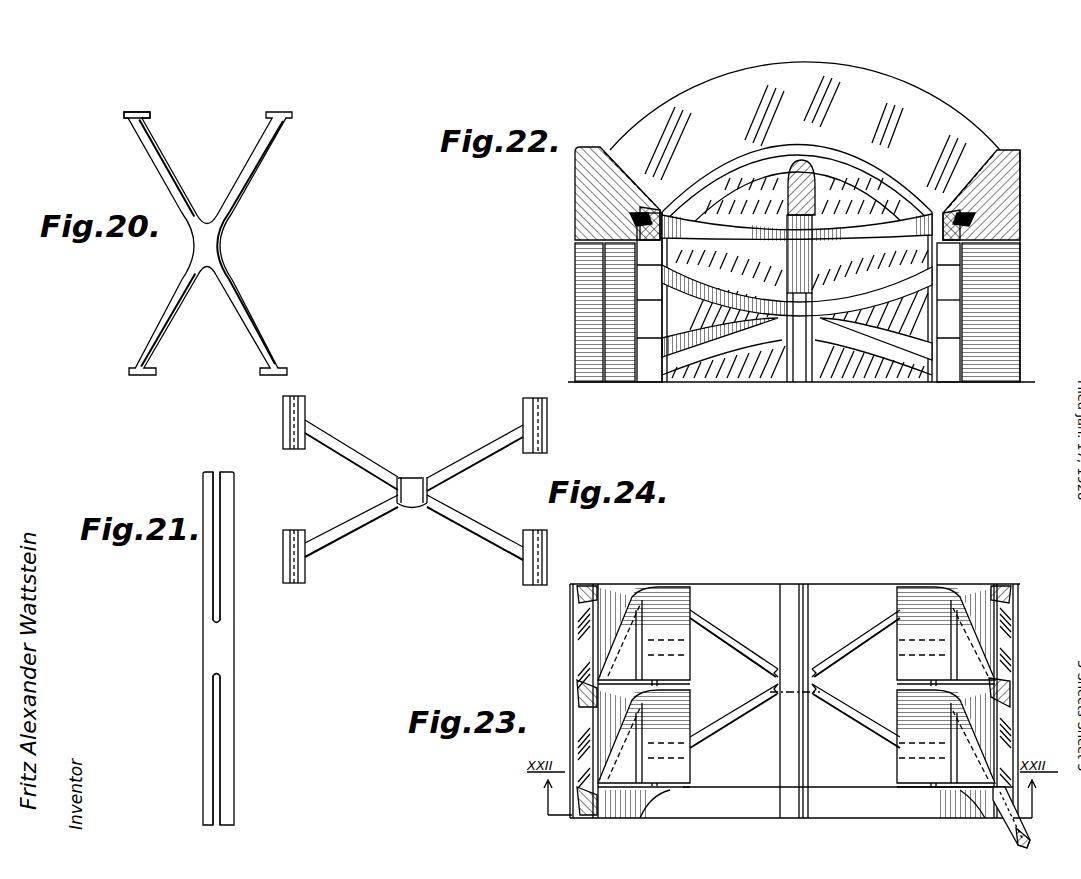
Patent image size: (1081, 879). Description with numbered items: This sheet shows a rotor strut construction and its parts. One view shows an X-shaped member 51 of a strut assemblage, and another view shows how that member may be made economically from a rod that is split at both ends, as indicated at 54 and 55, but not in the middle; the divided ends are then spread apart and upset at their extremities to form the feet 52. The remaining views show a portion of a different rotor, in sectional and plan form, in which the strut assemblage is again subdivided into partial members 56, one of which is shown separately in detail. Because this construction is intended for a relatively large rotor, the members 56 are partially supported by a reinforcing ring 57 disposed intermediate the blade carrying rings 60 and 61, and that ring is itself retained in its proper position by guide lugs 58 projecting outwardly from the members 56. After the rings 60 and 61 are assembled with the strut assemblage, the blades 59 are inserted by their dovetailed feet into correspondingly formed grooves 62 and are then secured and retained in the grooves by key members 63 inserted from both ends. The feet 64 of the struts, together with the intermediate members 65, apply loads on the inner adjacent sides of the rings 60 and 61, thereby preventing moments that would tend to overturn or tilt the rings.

In FIG. 20, the X-shaped member 51 is at (153, 152).
In FIG. 20, the feet 52 is at (142, 113).
In FIG. 21, the split 54 is at (215, 553).
In FIG. 21, the split 55 is at (212, 742).
In FIG. 22, the partial member 56 is at (890, 340).
In FIG. 24, the partial member 56 is at (480, 453).
In FIG. 23, the partial member 56 is at (843, 707).
In FIG. 22, the reinforcing ring 57 is at (807, 172).
In FIG. 23, the reinforcing ring 57 is at (802, 803).
In FIG. 22, the guide lug 58 is at (825, 208).
In FIG. 24, the guide lug 58 is at (418, 480).
In FIG. 22, the blade 59 is at (938, 122).
In FIG. 23, the blade 59 is at (912, 772).
In FIG. 22, the blade carrying ring 60 is at (1027, 187).
In FIG. 22, the blade carrying ring 61 is at (587, 199).
In FIG. 22, the groove 62 is at (998, 155).
In FIG. 23, the groove 62 is at (1007, 697).
In FIG. 23, the key member 63 is at (1012, 836).
In FIG. 22, the feet 64 is at (953, 287).
In FIG. 24, the feet 64 is at (533, 440).
In FIG. 22, the intermediate member 65 is at (948, 327).